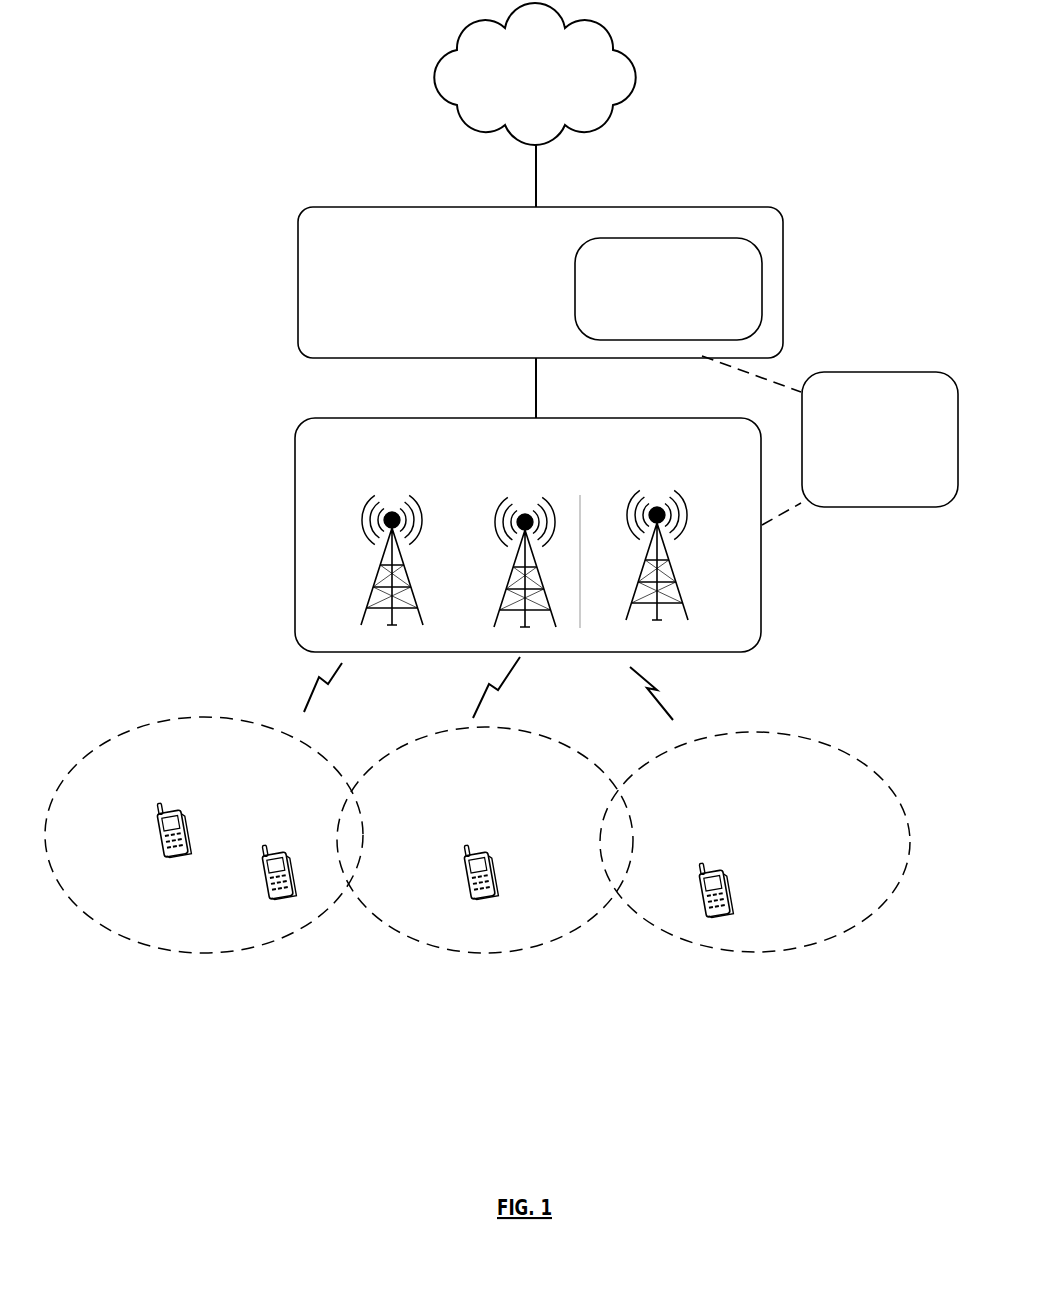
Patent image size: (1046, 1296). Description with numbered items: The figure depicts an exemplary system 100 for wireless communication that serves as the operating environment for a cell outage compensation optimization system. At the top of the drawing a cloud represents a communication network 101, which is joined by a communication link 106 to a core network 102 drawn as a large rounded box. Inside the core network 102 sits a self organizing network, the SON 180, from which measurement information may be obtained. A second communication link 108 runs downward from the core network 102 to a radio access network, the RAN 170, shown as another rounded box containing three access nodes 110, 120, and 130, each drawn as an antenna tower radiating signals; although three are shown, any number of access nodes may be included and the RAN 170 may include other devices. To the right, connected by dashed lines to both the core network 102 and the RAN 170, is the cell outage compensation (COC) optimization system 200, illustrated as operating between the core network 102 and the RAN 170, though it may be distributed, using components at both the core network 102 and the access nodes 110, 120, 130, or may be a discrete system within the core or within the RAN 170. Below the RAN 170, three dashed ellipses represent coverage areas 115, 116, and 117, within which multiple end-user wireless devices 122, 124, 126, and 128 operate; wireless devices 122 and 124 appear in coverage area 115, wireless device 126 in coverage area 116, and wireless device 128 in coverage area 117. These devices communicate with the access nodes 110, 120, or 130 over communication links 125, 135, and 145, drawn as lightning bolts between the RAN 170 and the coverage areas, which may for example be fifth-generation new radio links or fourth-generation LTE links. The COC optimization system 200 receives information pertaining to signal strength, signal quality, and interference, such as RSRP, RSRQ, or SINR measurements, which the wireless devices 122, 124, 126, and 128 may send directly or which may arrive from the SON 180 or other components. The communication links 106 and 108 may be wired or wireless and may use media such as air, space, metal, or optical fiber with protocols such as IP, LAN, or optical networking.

The system 100 is at (817, 98).
The communication network 101 is at (534, 74).
The core network 102 is at (540, 282).
The communication link 106 is at (533, 183).
The communication link 108 is at (533, 390).
The access node 110 is at (353, 502).
The access node 120 is at (563, 495).
The access node 130 is at (700, 498).
The radio access network (RAN) 170 is at (528, 535).
The SON 180 is at (668, 289).
The cell outage compensation (COC) optimization system 200 is at (830, 440).
The coverage area 115 is at (128, 727).
The coverage area 116 is at (425, 735).
The coverage area 117 is at (815, 740).
The communication link 125 is at (325, 683).
The communication link 135 is at (490, 690).
The communication link 145 is at (655, 683).
The wireless device 122 is at (154, 830).
The wireless device 124 is at (275, 863).
The wireless device 126 is at (478, 860).
The wireless device 128 is at (712, 878).